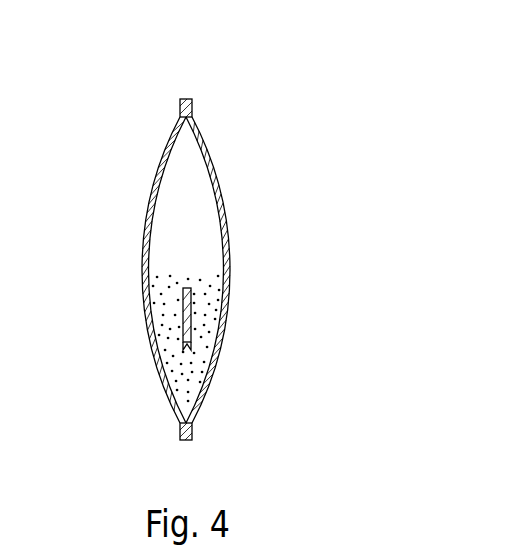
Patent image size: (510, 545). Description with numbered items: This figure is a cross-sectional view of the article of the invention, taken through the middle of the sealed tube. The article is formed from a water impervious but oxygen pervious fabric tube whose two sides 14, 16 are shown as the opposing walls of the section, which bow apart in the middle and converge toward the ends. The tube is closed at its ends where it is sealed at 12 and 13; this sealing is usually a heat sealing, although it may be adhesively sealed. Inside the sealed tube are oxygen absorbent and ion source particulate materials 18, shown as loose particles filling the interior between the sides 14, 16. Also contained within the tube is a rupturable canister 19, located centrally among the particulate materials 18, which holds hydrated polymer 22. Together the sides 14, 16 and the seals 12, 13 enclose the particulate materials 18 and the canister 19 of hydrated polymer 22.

The seal 12 is at (180, 108).
The seal 13 is at (180, 432).
The side 14 is at (143, 228).
The side 16 is at (227, 223).
The oxygen absorbent and ion source particulate materials 18 is at (165, 304).
The rupturable canister 19 is at (191, 314).
The hydrated polymer 22 is at (181, 328).